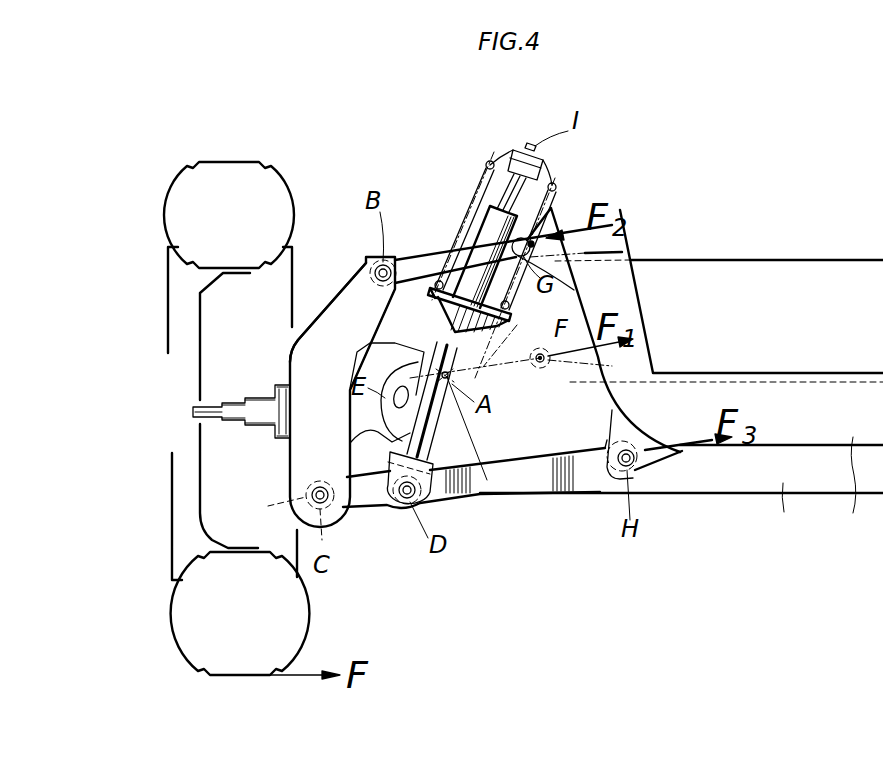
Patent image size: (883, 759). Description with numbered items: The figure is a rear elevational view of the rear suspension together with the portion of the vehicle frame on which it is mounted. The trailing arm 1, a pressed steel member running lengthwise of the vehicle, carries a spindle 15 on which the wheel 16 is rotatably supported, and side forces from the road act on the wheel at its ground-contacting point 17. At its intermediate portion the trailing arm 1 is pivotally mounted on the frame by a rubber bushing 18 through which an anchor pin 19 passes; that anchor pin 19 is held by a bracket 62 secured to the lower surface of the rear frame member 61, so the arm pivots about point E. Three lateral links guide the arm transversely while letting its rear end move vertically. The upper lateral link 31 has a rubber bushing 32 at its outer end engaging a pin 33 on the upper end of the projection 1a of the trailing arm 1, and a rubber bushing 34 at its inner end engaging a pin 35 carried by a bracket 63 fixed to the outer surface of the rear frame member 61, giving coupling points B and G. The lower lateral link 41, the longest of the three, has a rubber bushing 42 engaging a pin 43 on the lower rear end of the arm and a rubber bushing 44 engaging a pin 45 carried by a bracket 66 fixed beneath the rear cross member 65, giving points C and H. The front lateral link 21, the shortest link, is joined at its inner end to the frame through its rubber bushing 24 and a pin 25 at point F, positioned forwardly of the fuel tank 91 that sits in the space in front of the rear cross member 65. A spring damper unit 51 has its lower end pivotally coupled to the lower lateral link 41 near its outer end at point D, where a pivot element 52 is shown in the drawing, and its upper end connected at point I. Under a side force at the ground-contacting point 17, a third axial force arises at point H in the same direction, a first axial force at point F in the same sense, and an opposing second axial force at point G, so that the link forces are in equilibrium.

The trailing arm 1 is at (292, 453).
The projection 1a is at (347, 303).
The spindle 15 is at (206, 405).
The wheel 16 is at (278, 155).
The ground-contacting point 17 is at (187, 655).
The rubber bushing 18 is at (425, 445).
The anchor pin 19 is at (447, 400).
The front lateral link 21 is at (512, 333).
The rubber bushing 24 is at (592, 370).
The pin 25 is at (542, 370).
The upper lateral link 31 is at (422, 274).
The rubber bushing 32 is at (370, 262).
The pin 33 is at (373, 288).
The rubber bushing 34 is at (576, 274).
The pin 35 is at (500, 246).
The lower lateral link 41 is at (478, 483).
The rubber bushing 42 is at (283, 519).
The pin 43 is at (322, 487).
The rubber bushing 44 is at (640, 468).
The pin 45 is at (638, 450).
The spring damper unit 51 is at (486, 163).
The pivot bolt 52 is at (404, 500).
The rear frame member 61 is at (650, 316).
The bracket 62 is at (405, 343).
The bracket 63 is at (558, 208).
The rear cross member 65 is at (681, 494).
The bracket 66 is at (600, 480).
The fuel tank 91 is at (783, 517).